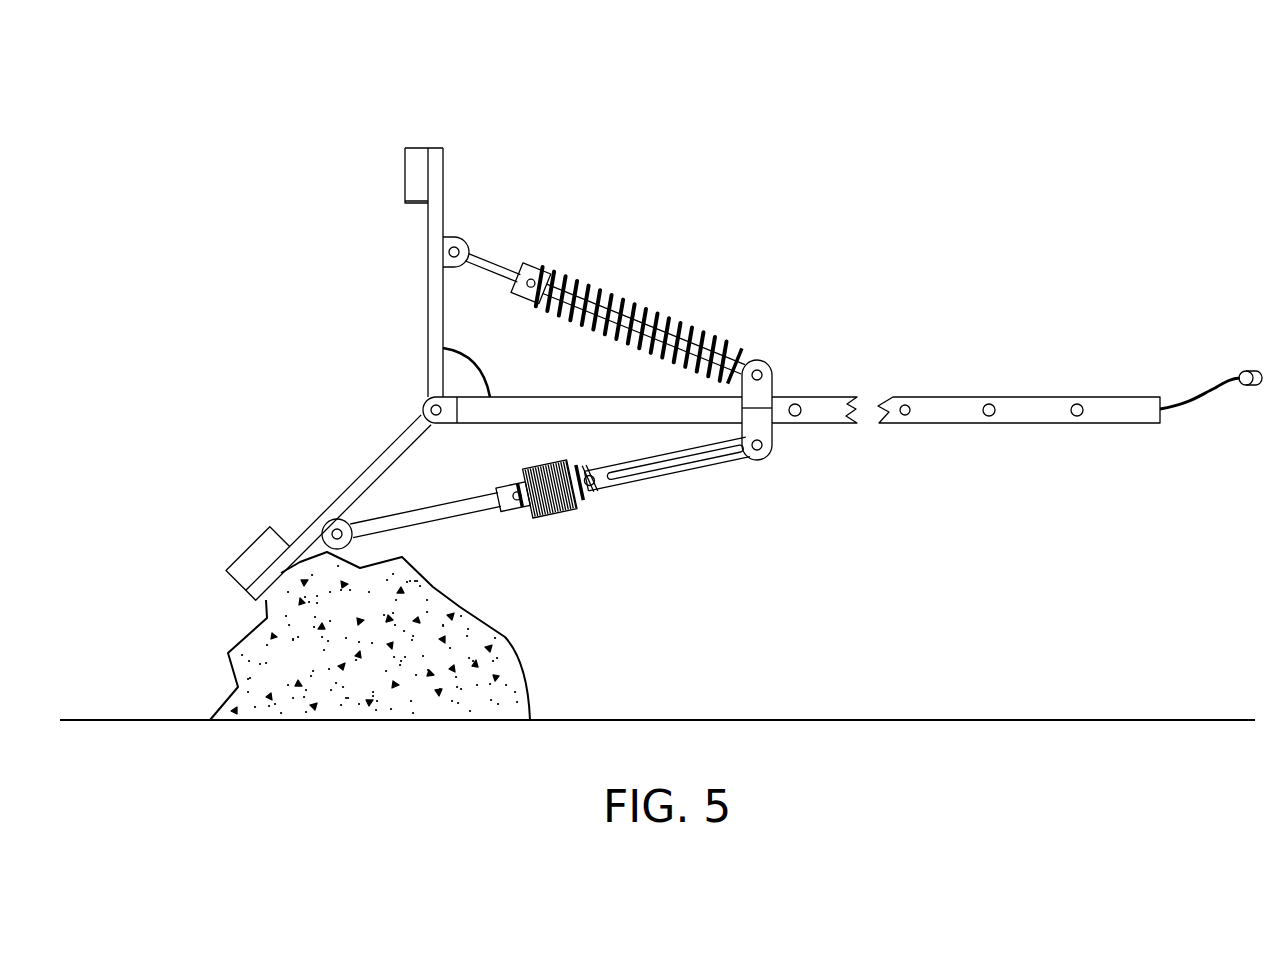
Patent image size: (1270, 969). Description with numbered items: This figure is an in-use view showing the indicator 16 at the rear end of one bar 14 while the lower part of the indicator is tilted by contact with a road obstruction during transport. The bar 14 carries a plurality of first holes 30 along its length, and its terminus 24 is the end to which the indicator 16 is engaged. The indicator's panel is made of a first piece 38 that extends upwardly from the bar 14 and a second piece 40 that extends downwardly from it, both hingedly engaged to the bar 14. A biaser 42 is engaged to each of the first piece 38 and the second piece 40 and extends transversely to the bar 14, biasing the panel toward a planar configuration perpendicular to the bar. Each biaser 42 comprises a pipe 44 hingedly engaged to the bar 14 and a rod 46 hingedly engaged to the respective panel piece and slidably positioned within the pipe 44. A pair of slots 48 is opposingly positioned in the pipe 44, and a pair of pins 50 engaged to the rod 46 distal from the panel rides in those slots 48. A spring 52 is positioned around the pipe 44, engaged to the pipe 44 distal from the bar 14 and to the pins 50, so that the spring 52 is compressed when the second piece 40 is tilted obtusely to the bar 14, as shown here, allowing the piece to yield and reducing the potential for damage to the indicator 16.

The bar 14 is at (963, 397).
The indicator 16 is at (405, 178).
The terminus 24 is at (424, 410).
The first hole 30 is at (1076, 416).
The first piece 38 is at (429, 280).
The second piece 40 is at (346, 492).
The biaser 42 is at (607, 460).
The pipe 44 is at (742, 462).
The rod 46 is at (440, 526).
The slot 48 is at (695, 460).
The pin 50 is at (591, 487).
The spring 52 is at (545, 512).